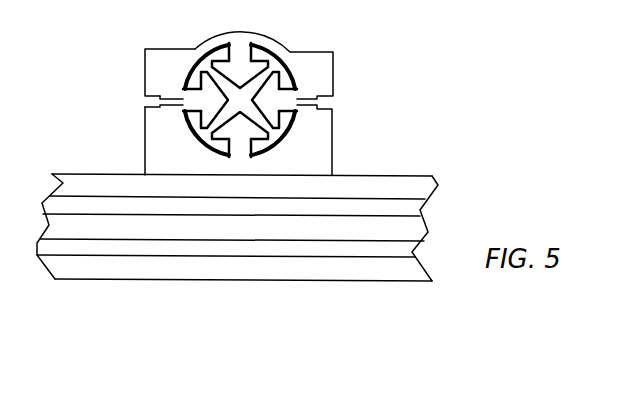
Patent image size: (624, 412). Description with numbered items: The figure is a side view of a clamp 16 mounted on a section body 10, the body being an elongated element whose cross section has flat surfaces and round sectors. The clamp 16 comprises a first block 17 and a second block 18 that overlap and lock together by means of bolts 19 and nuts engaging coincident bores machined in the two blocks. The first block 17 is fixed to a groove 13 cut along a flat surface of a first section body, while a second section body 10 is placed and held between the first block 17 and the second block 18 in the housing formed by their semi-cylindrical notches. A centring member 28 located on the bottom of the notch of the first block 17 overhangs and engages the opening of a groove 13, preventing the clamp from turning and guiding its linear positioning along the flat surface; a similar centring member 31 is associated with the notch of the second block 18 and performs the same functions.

The section body 10 is at (254, 105).
The groove 13 is at (327, 248).
The clamp 16 is at (139, 115).
The first block 17 is at (335, 135).
The second block 18 is at (337, 67).
The bolts 19 is at (166, 98).
The centring member 28 is at (239, 158).
The centring member 31 is at (239, 56).